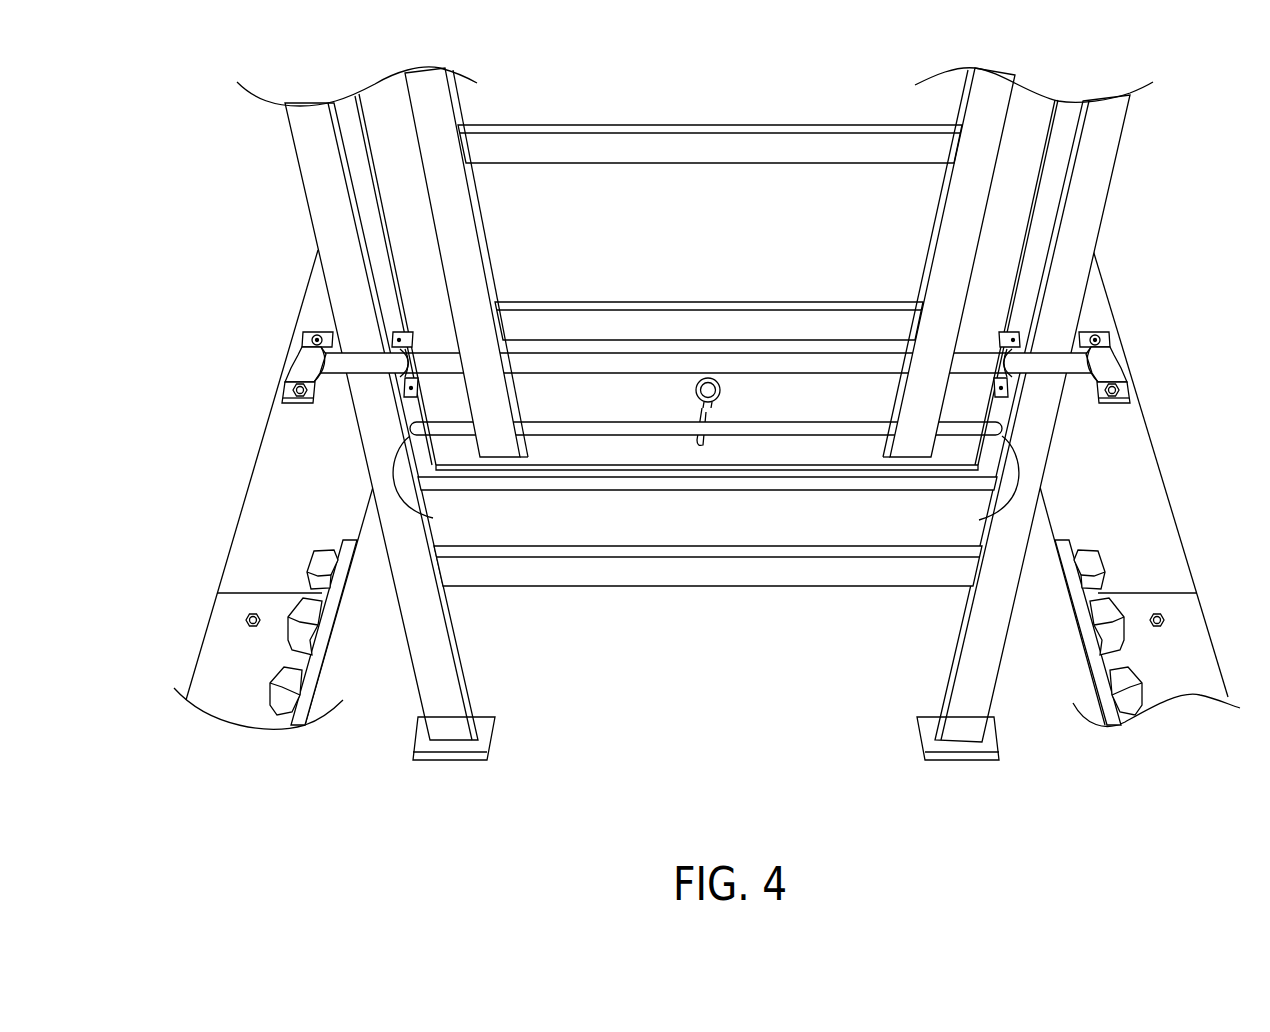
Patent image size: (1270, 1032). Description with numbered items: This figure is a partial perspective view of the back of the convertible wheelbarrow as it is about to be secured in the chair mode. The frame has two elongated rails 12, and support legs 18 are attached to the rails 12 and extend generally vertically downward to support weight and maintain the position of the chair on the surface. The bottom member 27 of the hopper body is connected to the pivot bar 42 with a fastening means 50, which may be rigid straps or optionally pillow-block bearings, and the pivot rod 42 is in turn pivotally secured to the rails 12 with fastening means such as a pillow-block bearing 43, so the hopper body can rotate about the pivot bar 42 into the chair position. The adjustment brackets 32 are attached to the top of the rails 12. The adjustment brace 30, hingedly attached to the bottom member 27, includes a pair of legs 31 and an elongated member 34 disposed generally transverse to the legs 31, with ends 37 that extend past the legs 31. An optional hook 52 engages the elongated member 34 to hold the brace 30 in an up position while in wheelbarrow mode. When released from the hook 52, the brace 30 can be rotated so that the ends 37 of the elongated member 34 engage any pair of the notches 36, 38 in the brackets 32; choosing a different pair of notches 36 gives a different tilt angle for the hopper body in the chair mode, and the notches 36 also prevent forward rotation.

The rails 12 is at (285, 448).
The support legs 18 is at (440, 667).
The bottom member 27 is at (387, 155).
The adjustment brace 30 is at (760, 269).
The legs 31 is at (465, 263).
The adjustment brackets 32 is at (1090, 643).
The elongated member 34 is at (598, 430).
The notches 36 is at (1135, 605).
The ends 37 is at (433, 518).
The notches 38 is at (298, 640).
The pivot bar 42 is at (355, 362).
The pillow-block bearing 43 is at (297, 363).
The fastening means 50 is at (400, 332).
The hook 52 is at (717, 403).